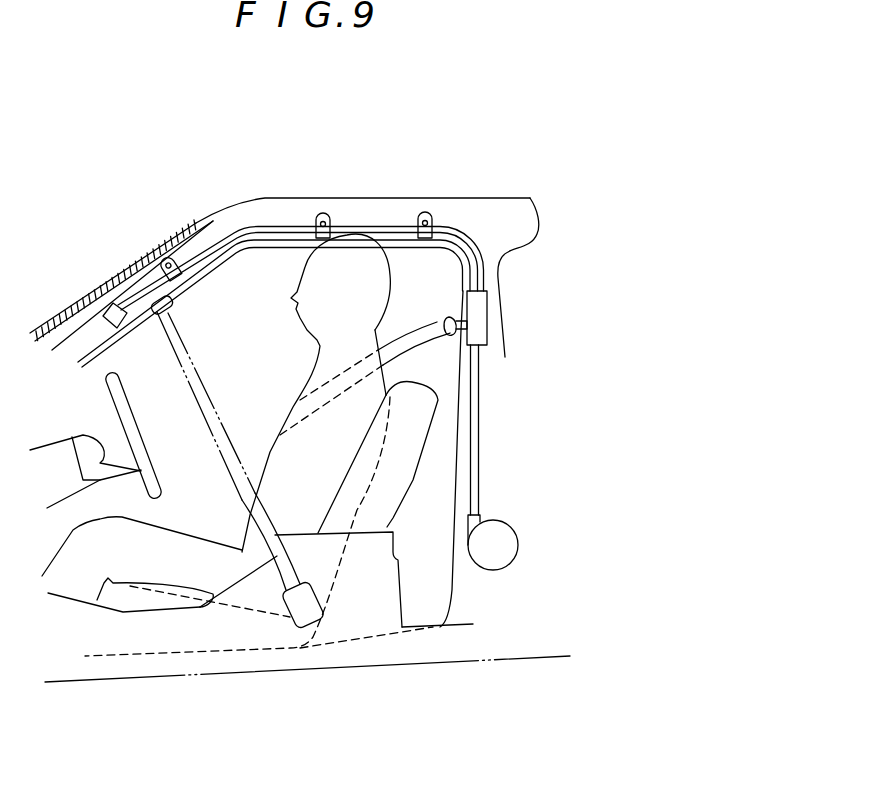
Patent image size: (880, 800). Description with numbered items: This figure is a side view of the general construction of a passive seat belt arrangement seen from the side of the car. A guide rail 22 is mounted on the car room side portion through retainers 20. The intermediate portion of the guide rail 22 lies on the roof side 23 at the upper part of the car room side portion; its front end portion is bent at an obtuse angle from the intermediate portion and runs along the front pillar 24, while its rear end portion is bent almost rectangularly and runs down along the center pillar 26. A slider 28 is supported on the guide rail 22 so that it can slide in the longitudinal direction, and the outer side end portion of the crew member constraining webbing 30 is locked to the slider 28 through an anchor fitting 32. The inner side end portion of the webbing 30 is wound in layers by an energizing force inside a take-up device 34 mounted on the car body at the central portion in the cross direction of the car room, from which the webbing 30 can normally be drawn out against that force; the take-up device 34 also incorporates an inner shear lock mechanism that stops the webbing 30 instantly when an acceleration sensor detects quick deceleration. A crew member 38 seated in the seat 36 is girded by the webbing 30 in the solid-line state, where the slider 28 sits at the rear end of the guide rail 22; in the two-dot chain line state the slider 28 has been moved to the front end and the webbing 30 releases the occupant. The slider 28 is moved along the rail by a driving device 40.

The retainers 20 is at (317, 220).
The guide rail 22 is at (388, 218).
The roof side 23 is at (417, 207).
The front pillar 24 is at (128, 295).
The center pillar 26 is at (497, 313).
The slider 28 is at (126, 242).
The webbing 30 is at (222, 410).
The anchor fitting 32 is at (452, 338).
The take-up device 34 is at (308, 602).
The seat 36 is at (390, 524).
The crew member 38 is at (353, 252).
The driving device 40 is at (507, 538).